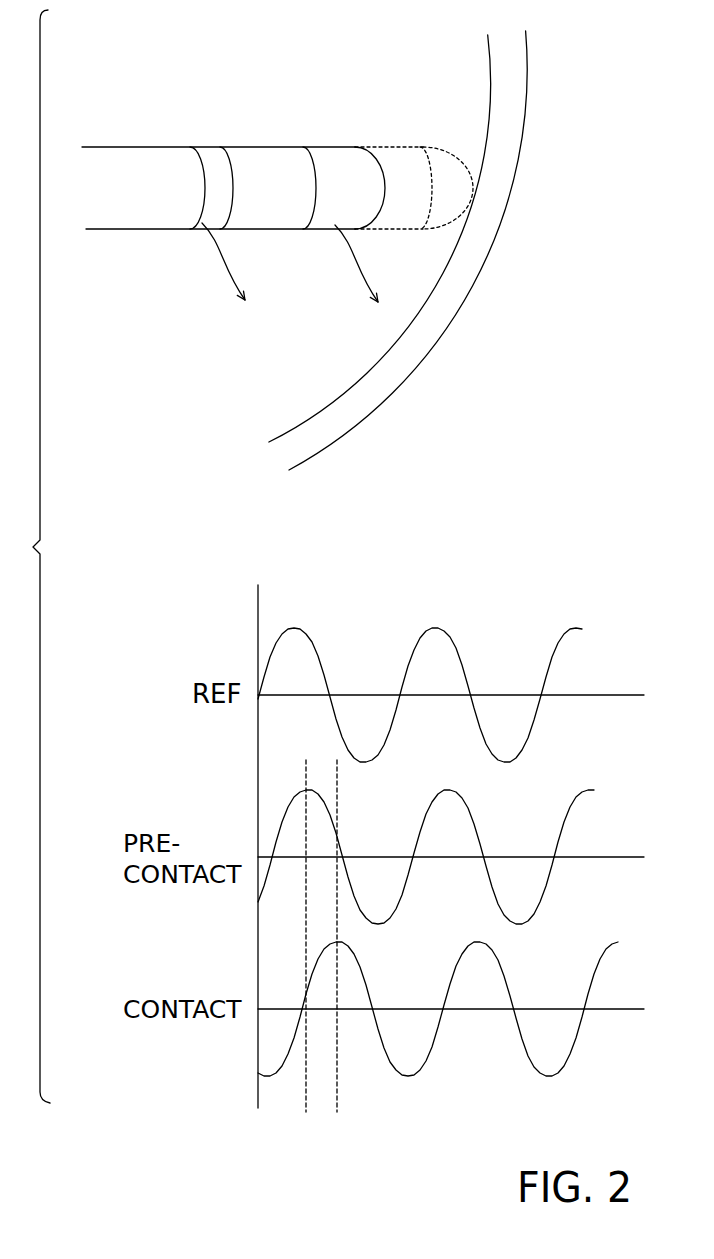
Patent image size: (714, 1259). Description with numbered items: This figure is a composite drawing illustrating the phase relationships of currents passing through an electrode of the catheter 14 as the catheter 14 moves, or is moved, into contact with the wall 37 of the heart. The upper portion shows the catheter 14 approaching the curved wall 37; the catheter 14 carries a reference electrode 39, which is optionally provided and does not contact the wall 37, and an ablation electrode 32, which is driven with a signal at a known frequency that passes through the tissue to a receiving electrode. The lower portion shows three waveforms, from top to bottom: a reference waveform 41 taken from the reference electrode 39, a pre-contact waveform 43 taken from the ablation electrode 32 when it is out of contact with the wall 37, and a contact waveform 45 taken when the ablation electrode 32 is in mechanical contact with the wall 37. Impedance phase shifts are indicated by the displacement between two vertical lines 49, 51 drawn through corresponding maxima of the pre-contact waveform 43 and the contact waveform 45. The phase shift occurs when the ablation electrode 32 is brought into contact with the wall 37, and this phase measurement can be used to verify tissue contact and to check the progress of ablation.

The catheter 14 is at (112, 146).
The reference electrode 39 is at (202, 146).
The ablation electrode 32 is at (315, 147).
The wall 37 is at (389, 398).
The reference waveform 41 is at (405, 636).
The pre-contact waveform 43 is at (405, 826).
The contact waveform 45 is at (436, 988).
The vertical line 49 is at (295, 1117).
The vertical line 51 is at (357, 1117).